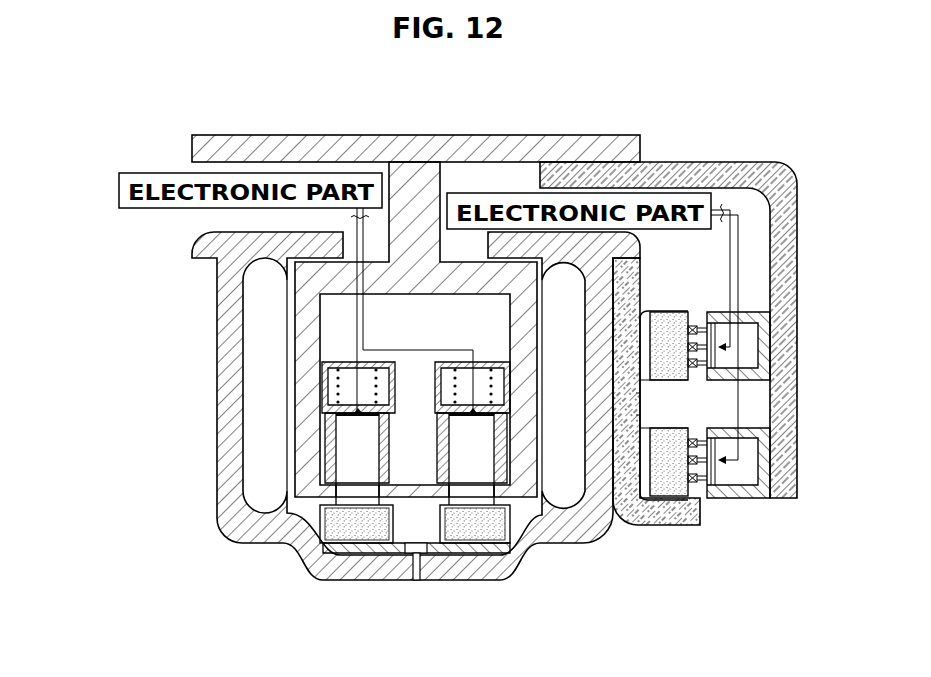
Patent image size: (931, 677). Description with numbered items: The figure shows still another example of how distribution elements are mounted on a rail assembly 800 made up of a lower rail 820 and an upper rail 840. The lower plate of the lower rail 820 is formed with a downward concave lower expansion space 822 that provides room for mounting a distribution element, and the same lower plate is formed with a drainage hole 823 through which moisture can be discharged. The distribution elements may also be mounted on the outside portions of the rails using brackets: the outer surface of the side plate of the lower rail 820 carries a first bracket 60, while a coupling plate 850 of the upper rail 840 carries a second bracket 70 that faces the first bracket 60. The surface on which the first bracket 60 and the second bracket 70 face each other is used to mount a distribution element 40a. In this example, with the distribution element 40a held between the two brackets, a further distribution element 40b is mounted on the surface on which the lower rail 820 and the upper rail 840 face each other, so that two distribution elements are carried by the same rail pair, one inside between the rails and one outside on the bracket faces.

The coupling plate 850 is at (293, 148).
The second bracket 70 is at (787, 223).
The distribution element 40b is at (705, 296).
The actuator assembly 800 is at (335, 371).
The lower rail 820 is at (232, 309).
The upper rail 840 is at (305, 343).
The first bracket 60 is at (636, 512).
The distribution element 40a is at (335, 400).
The drainage hole 823 is at (417, 562).
The lower expansion space 822 is at (466, 547).